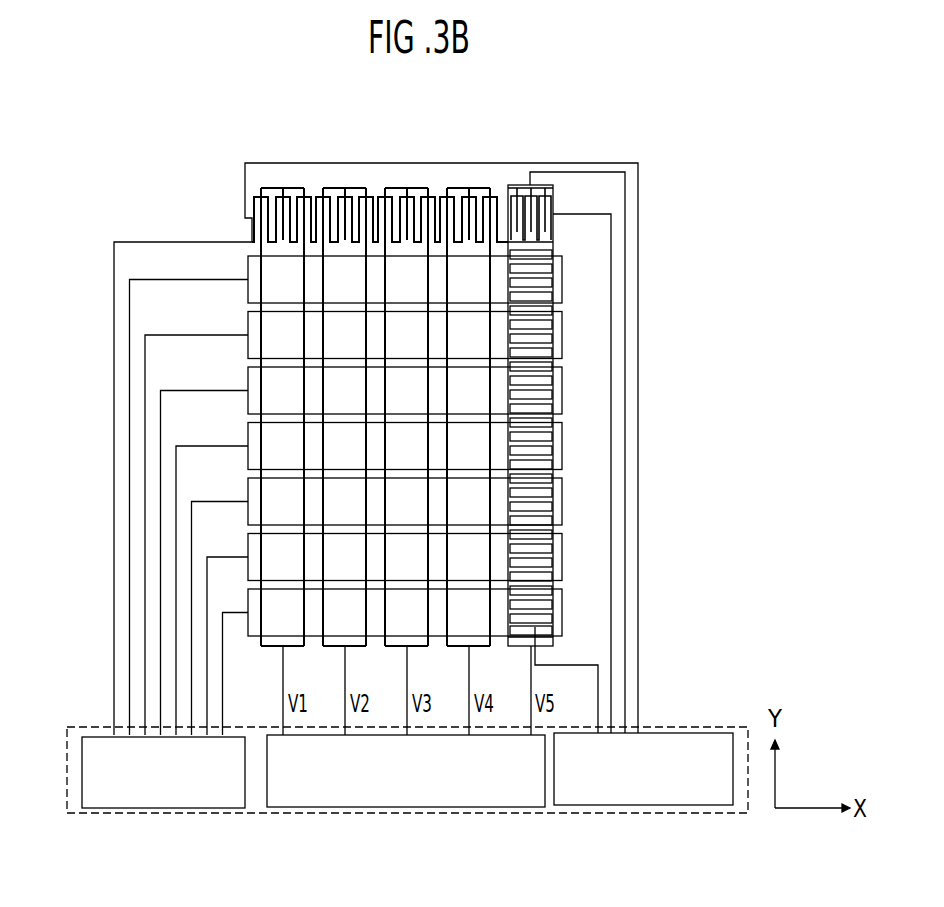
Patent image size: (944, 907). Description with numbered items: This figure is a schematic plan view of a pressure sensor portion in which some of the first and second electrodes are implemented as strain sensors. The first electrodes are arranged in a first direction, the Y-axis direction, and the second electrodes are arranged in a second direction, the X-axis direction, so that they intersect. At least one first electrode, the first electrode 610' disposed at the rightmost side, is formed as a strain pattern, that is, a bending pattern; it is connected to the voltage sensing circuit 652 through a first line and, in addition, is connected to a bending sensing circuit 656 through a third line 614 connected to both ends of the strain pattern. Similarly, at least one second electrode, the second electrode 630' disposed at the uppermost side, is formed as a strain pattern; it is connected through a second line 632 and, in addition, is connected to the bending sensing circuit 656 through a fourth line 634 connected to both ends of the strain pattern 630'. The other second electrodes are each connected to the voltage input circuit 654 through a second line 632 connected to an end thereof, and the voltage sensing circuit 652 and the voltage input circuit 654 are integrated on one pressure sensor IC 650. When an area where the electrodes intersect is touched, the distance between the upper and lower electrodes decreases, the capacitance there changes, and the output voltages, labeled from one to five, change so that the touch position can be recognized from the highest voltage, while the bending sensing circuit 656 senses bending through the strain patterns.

The second electrode 630' is at (380, 424).
The fourth line 634 is at (582, 213).
The first electrode 610' is at (609, 460).
The second line 632 is at (114, 665).
The third line 614 is at (598, 683).
The pressure sensor IC 650 is at (320, 818).
The voltage sensing circuit 652 is at (455, 810).
The voltage input circuit 654 is at (178, 810).
The bending sensing circuit 656 is at (638, 805).